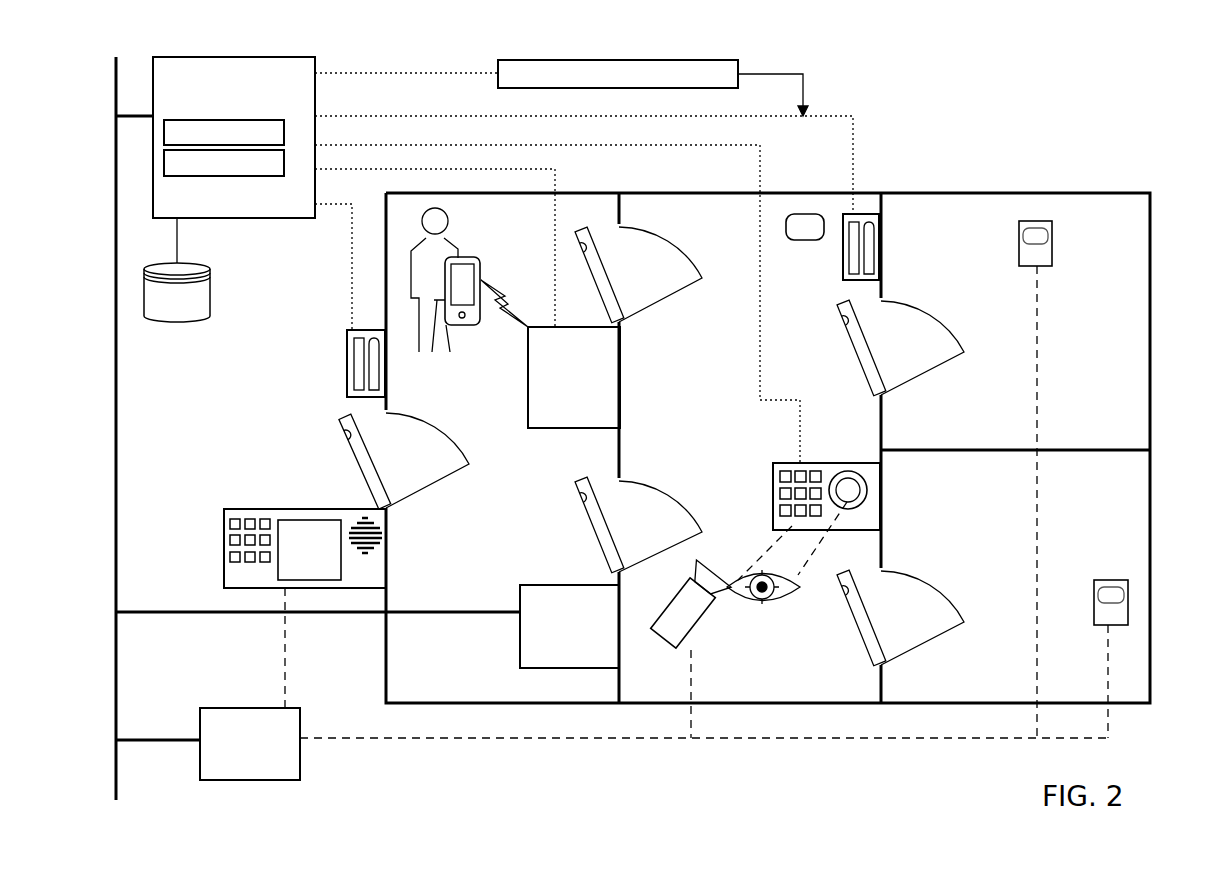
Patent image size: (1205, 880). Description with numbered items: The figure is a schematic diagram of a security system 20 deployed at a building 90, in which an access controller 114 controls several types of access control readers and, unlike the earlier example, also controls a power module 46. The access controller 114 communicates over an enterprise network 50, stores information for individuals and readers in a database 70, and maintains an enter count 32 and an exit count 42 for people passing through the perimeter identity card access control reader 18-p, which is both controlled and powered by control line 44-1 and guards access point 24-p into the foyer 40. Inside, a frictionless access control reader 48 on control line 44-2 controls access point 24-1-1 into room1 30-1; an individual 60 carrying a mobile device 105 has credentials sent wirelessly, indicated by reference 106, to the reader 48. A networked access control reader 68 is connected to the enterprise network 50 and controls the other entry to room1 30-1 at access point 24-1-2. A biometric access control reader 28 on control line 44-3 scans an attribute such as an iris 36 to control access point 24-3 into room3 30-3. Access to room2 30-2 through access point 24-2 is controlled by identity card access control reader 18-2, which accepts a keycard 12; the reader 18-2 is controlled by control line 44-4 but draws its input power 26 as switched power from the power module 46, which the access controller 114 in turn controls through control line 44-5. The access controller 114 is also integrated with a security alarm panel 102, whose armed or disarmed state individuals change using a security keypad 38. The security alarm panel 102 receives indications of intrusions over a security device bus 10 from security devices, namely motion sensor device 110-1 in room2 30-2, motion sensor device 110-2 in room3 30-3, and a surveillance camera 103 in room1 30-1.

The security device bus 10 is at (955, 738).
The keycard 12 is at (805, 240).
The identity card access control reader 18-p is at (347, 362).
The identity card access control reader 18-2 is at (875, 265).
The security system 20 is at (585, 766).
The access point 24-p is at (350, 466).
The access point 24-1-1 is at (640, 306).
The access point 24-1-2 is at (601, 530).
The access point 24-2 is at (850, 360).
The access point 24-3 is at (856, 622).
The source of input power 26 is at (803, 88).
The biometric access control reader 28 is at (773, 480).
The room1 30-1 is at (757, 681).
The room2 30-2 is at (1106, 222).
The room3 30-3 is at (1109, 476).
The enter count 32 is at (224, 132).
The iris 36 is at (754, 598).
The security keypad 38 is at (268, 509).
The foyer 40 is at (462, 681).
The exit count 42 is at (224, 163).
The control line 44-1 is at (318, 200).
The control line 44-2 is at (405, 167).
The control line 44-3 is at (420, 143).
The control line 44-4 is at (434, 114).
The control line 44-5 is at (434, 78).
The power module 46 is at (618, 74).
The frictionless access control reader 48 is at (574, 377).
The enterprise network 50 is at (114, 430).
The individual 60 is at (448, 228).
The networked access control reader 68 is at (367, 626).
The database 70 is at (170, 322).
The building 90 is at (492, 703).
The security alarm panel 102 is at (208, 744).
The surveillance camera 103 is at (688, 606).
The mobile device 105 is at (465, 257).
The wireless communication 106 is at (505, 296).
The motion sensor device 110-1 is at (1019, 256).
The motion sensor device 110-2 is at (1108, 580).
The access controller 114 is at (215, 137).